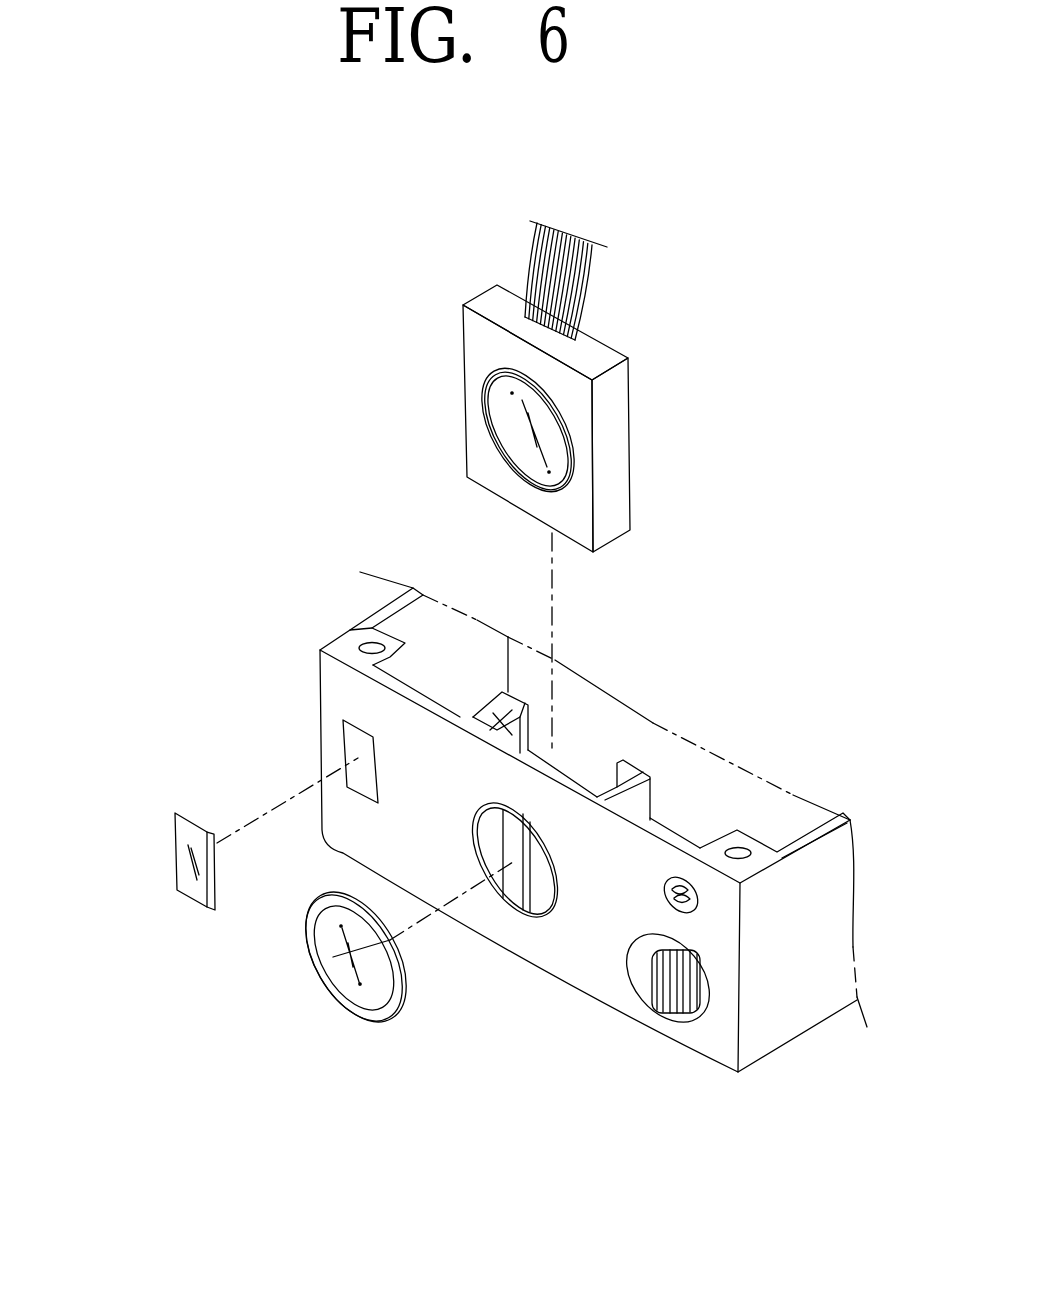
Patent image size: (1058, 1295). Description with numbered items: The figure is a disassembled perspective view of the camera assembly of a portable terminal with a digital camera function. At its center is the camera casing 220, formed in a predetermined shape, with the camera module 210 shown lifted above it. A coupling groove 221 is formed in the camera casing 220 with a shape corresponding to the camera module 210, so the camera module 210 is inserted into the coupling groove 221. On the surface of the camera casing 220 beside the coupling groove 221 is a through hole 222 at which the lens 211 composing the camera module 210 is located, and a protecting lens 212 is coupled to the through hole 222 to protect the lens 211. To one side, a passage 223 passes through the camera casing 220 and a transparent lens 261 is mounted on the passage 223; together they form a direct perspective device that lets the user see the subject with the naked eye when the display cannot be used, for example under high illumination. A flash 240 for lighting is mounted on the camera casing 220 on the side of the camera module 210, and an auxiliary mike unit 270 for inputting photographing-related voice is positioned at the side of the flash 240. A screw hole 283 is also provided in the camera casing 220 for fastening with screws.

The camera module 210 is at (648, 392).
The lens 211 is at (508, 412).
The protecting lens 212 is at (337, 957).
The camera casing 220 is at (308, 724).
The coupling groove 221 is at (500, 700).
The through hole 222 is at (543, 882).
The passage 223 is at (347, 748).
The flash 240 is at (640, 1015).
The transparent lens 261 is at (177, 846).
The auxiliary mike unit 270 is at (687, 912).
The screw hole 283 is at (748, 840).